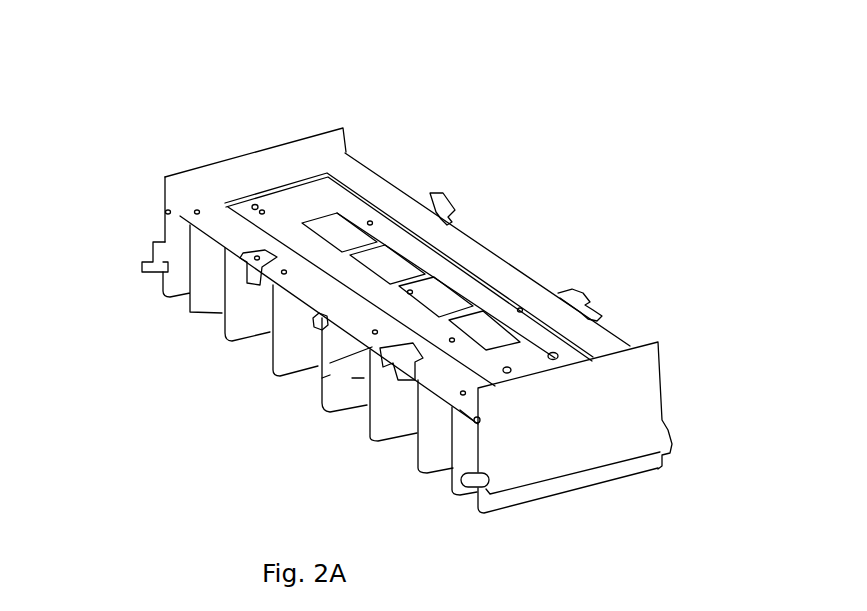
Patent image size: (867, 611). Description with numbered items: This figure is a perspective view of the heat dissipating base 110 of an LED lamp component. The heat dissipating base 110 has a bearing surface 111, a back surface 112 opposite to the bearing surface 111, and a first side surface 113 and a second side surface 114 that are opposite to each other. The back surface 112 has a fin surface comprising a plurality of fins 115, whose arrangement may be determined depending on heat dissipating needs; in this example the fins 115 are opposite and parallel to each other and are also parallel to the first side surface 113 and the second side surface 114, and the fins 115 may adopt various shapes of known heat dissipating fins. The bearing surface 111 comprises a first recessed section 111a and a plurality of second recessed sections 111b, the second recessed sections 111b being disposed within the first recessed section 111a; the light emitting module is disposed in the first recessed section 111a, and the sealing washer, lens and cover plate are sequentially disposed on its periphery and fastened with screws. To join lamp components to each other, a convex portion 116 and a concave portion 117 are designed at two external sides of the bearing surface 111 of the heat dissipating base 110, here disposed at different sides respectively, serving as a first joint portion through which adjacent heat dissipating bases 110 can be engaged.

The heat dissipating base 110 is at (116, 42).
The bearing surface 111 is at (390, 188).
The first recessed section 111a is at (258, 204).
The second recessed sections 111b is at (467, 323).
The back surface 112 is at (358, 375).
The first side surface 113 is at (558, 442).
The second side surface 114 is at (263, 147).
The fins 115 is at (328, 376).
The convex portion 116 is at (560, 293).
The concave portion 117 is at (238, 256).